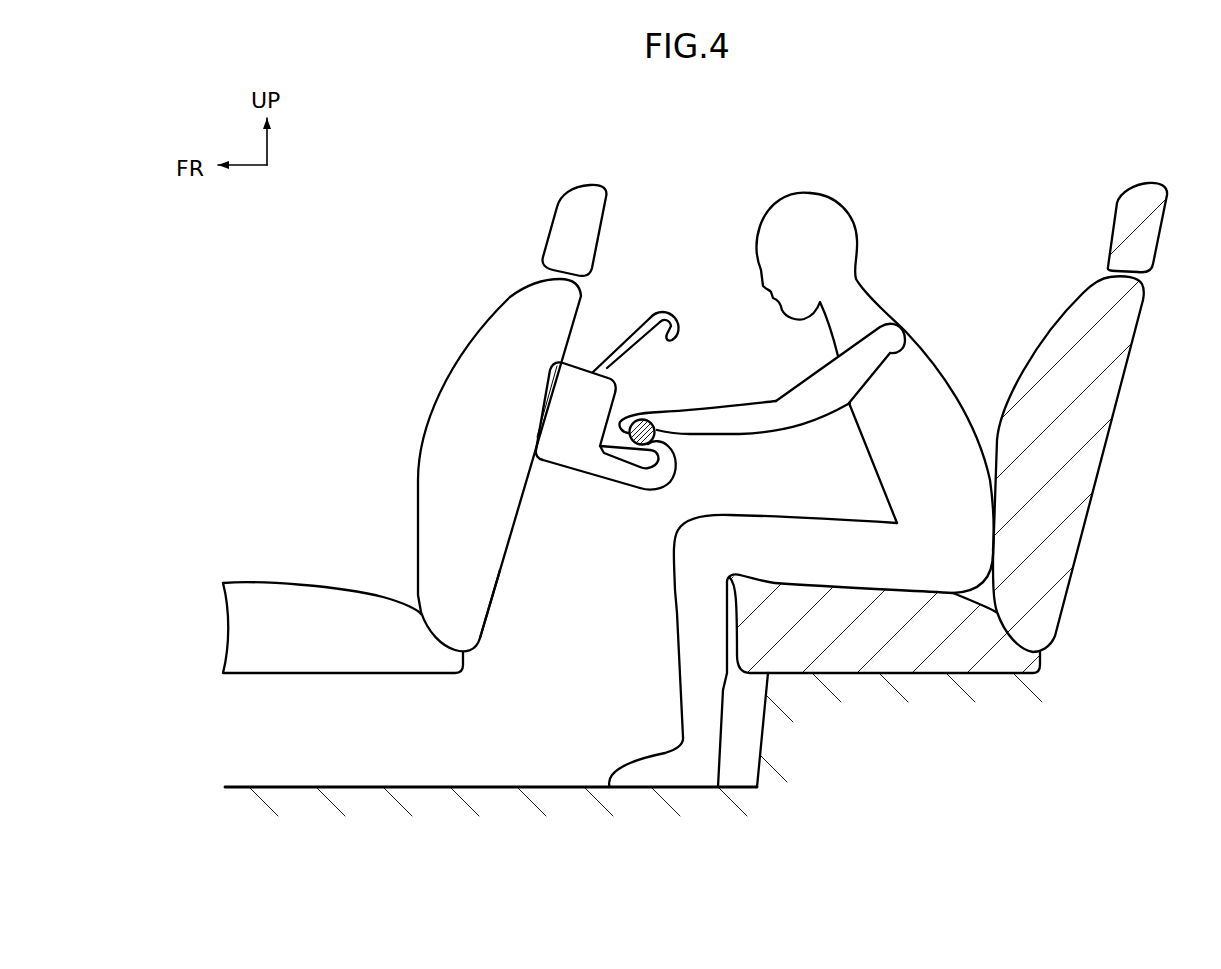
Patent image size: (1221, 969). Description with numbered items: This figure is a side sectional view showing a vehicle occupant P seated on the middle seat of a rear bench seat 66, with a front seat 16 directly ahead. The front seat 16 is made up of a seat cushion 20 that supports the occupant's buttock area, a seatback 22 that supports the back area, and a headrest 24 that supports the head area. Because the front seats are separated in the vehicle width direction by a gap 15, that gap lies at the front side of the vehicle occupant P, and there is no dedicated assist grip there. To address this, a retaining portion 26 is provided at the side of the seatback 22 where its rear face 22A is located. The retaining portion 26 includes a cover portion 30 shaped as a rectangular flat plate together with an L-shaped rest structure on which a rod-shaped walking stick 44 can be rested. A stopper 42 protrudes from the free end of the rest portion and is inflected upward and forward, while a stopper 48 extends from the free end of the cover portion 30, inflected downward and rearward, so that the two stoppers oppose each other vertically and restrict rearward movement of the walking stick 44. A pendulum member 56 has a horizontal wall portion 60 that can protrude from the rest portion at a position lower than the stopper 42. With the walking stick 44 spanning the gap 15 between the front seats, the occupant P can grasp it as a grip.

The gap 15 is at (500, 400).
The front seat 16 is at (578, 226).
The seat cushion 20 is at (302, 606).
The seatback 22 is at (448, 413).
The rear face 22A is at (492, 604).
The headrest 24 is at (560, 219).
The retaining portion 26 is at (641, 473).
The cover portion 30 is at (647, 319).
The stopper 42 is at (676, 465).
The walking stick 44 is at (645, 423).
The stopper 48 is at (664, 318).
The pendulum member 56 is at (634, 462).
The horizontal wall portion 60 is at (625, 515).
The bench seat 66 is at (1108, 458).
The vehicle occupant P is at (936, 356).